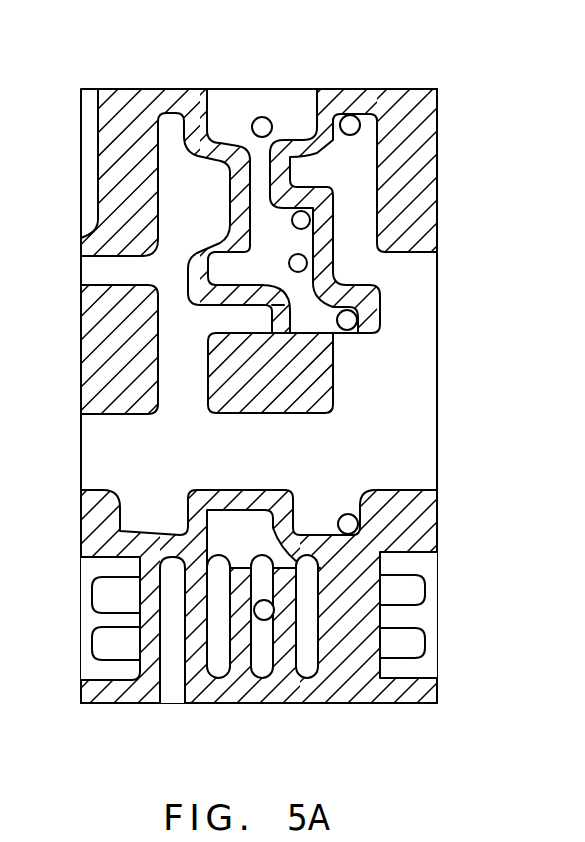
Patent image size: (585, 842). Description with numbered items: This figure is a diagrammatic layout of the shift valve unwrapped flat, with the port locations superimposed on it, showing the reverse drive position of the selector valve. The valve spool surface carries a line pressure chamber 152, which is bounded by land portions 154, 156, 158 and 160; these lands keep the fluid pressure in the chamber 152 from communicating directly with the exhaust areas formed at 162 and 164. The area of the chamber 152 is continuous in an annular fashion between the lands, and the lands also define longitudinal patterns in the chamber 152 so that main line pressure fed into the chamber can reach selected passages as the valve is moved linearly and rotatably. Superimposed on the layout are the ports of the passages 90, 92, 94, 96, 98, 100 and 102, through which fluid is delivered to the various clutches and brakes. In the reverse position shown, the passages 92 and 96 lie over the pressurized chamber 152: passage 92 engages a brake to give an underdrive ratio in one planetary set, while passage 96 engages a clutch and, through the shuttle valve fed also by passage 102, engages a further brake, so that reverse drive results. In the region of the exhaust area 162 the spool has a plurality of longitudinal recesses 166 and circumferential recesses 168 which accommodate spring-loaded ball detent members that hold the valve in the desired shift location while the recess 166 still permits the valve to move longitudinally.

The passage 90 is at (258, 118).
The passage 92 is at (348, 513).
The passage 94 is at (356, 324).
The passage 96 is at (350, 136).
The passage 98 is at (292, 233).
The passage 100 is at (288, 264).
The passage 102 is at (264, 620).
The line pressure chamber 152 is at (414, 397).
The land portion 154 is at (267, 500).
The land portion 156 is at (131, 398).
The land portion 158 is at (290, 400).
The land portion 160 is at (137, 113).
The exhaust area 162 is at (250, 706).
The exhaust area 164 is at (288, 100).
The longitudinal recess 166 is at (297, 565).
The circumferential recess 168 is at (132, 612).